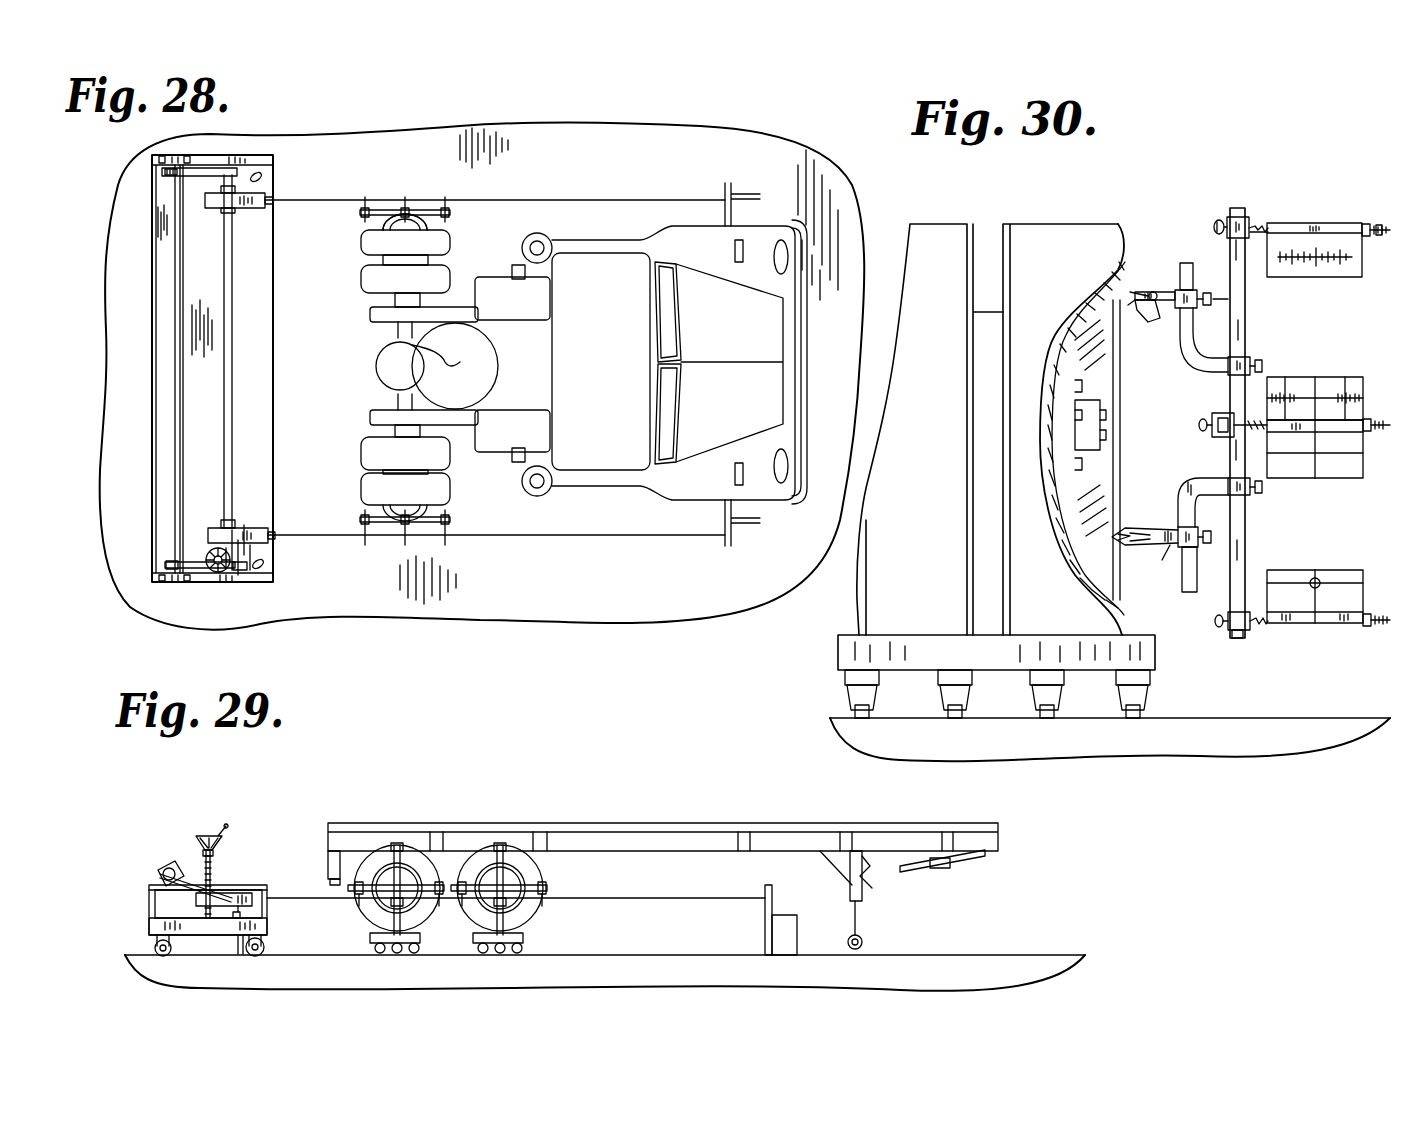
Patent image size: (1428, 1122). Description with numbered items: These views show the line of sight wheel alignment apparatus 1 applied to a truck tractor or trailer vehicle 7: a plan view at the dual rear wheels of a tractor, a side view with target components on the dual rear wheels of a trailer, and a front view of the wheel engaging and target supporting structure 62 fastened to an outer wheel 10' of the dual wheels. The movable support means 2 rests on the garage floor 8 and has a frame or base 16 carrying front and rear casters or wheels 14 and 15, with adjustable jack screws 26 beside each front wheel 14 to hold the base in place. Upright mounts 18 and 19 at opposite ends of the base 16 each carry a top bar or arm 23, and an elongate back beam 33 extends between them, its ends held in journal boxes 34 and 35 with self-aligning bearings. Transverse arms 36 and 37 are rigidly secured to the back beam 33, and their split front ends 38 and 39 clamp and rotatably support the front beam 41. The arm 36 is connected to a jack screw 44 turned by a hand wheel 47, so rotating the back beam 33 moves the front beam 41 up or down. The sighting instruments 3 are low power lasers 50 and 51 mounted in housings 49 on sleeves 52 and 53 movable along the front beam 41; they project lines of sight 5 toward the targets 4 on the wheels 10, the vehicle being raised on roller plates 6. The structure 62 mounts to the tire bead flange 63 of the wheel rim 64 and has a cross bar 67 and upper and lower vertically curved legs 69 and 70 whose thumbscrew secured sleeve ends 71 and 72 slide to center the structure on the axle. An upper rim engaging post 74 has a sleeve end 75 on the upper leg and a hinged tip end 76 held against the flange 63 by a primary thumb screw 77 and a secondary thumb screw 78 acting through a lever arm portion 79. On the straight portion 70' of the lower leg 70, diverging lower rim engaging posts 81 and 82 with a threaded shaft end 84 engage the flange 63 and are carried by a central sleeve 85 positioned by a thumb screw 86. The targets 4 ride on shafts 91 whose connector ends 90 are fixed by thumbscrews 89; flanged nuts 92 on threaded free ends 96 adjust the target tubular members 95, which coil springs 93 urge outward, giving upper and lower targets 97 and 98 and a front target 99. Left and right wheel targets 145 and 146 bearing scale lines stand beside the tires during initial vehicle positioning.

In FIG. 28, the line of sight wheel alignment apparatus 1 is at (152, 502).
In FIG. 28, the movable support means 2 is at (152, 445).
In FIG. 28, the sighting instruments 3 is at (265, 528).
In FIG. 29, the sighting instruments 3 is at (232, 897).
In FIG. 30, the sighting instruments 3 is at (1139, 539).
In FIG. 30, the targets 4 is at (1346, 270).
In FIG. 28, the lines of sight 5 is at (360, 180).
In FIG. 29, the lines of sight 5 is at (322, 902).
In FIG. 28, the roller plates 6 is at (428, 223).
In FIG. 29, the roller plates 6 is at (370, 938).
In FIG. 30, the roller plates 6 is at (1040, 640).
In FIG. 28, the vehicle 7 is at (610, 366).
In FIG. 29, the vehicle 7 is at (612, 823).
In FIG. 28, the garage floor 8 is at (612, 145).
In FIG. 29, the garage floor 8 is at (940, 945).
In FIG. 30, the garage floor 8 is at (1180, 712).
In FIG. 29, the wheels 10 is at (448, 867).
In FIG. 28, the outer wheel 10' is at (429, 367).
In FIG. 30, the outer wheel 10' is at (990, 411).
In FIG. 29, the front casters or wheels 14 is at (262, 957).
In FIG. 29, the rear casters or wheels 15 is at (160, 957).
In FIG. 29, the frame or base 16 is at (149, 928).
In FIG. 28, the upright mount 18 is at (230, 583).
In FIG. 29, the upright mount 18 is at (149, 898).
In FIG. 28, the upright mount 19 is at (222, 158).
In FIG. 28, the top bar or arm 23 is at (268, 578).
In FIG. 29, the top bar or arm 23 is at (258, 885).
In FIG. 28, the adjustable jack screws 26 is at (264, 172).
In FIG. 29, the adjustable jack screws 26 is at (240, 956).
In FIG. 28, the back beam 33 is at (175, 396).
In FIG. 28, the journal box 34 is at (178, 584).
In FIG. 29, the journal box 34 is at (158, 872).
In FIG. 28, the journal box 35 is at (160, 156).
In FIG. 28, the transverse arm 36 is at (165, 564).
In FIG. 29, the transverse arm 36 is at (190, 870).
In FIG. 28, the transverse arm 37 is at (200, 178).
In FIG. 28, the front end 38 is at (244, 572).
In FIG. 28, the front end 39 is at (258, 188).
In FIG. 28, the front beam 41 is at (232, 360).
In FIG. 28, the jack screw 44 is at (212, 585).
In FIG. 29, the jack screw 44 is at (212, 862).
In FIG. 29, the hand wheel 47 is at (206, 832).
In FIG. 28, the housings 49 is at (243, 208).
In FIG. 28, the laser 50 is at (275, 533).
In FIG. 28, the laser 51 is at (270, 204).
In FIG. 28, the sleeve 52 is at (228, 525).
In FIG. 28, the sleeve 53 is at (222, 212).
In FIG. 28, the wheel engaging and target supporting structure 62 is at (452, 524).
In FIG. 29, the wheel engaging and target supporting structure 62 is at (416, 898).
In FIG. 30, the wheel engaging and target supporting structure 62 is at (1232, 245).
In FIG. 30, the tire bead flange 63 is at (1122, 405).
In FIG. 30, the wheel rim 64 is at (1102, 467).
In FIG. 30, the cross bar 67 is at (1222, 410).
In FIG. 30, the upper leg 69 is at (1178, 270).
In FIG. 30, the lower leg 70 is at (1189, 495).
In FIG. 30, the straight portion 70' is at (1174, 585).
In FIG. 30, the sleeve end 71 is at (1250, 358).
In FIG. 30, the sleeve end 72 is at (1250, 495).
In FIG. 30, the upper rim engaging post 74 is at (1160, 270).
In FIG. 30, the sleeve end 75 is at (1197, 295).
In FIG. 30, the hinged tip end 76 is at (1128, 290).
In FIG. 30, the primary thumb screw 77 is at (1212, 301).
In FIG. 30, the secondary thumb screw 78 is at (1142, 322).
In FIG. 30, the lever arm portion 79 is at (1150, 352).
In FIG. 30, the lower rim engaging post 81 is at (1166, 562).
In FIG. 30, the lower rim engaging post 82 is at (1145, 550).
In FIG. 30, the threaded shaft end 84 is at (1125, 530).
In FIG. 30, the central sleeve 85 is at (1250, 224).
In FIG. 30, the thumb screw 86 is at (1211, 541).
In FIG. 30, the thumbscrews 89 is at (1221, 220).
In FIG. 30, the connector ends 90 is at (1262, 226).
In FIG. 30, the shafts 91 is at (1270, 230).
In FIG. 30, the flanged nuts 92 is at (1370, 416).
In FIG. 30, the coil springs 93 is at (1242, 632).
In FIG. 30, the target tubular members 95 is at (1358, 225).
In FIG. 30, the threaded free ends 96 is at (1384, 236).
In FIG. 30, the upper target 97 is at (1332, 222).
In FIG. 30, the lower target 98 is at (1352, 570).
In FIG. 30, the front target 99 is at (1358, 464).
In FIG. 28, the left wheel target 145 is at (735, 540).
In FIG. 29, the left wheel target 145 is at (790, 915).
In FIG. 28, the right wheel target 146 is at (735, 190).